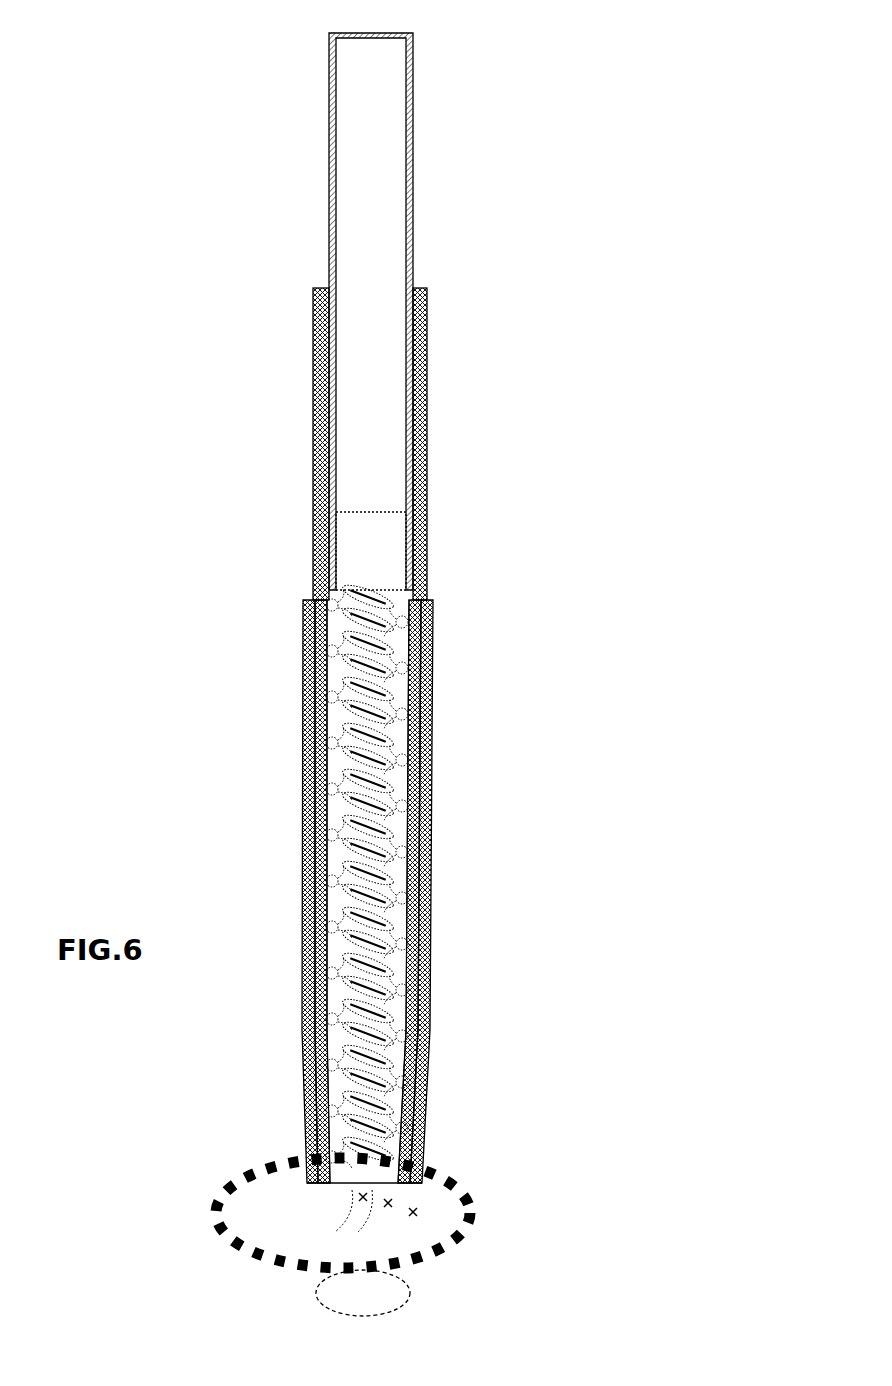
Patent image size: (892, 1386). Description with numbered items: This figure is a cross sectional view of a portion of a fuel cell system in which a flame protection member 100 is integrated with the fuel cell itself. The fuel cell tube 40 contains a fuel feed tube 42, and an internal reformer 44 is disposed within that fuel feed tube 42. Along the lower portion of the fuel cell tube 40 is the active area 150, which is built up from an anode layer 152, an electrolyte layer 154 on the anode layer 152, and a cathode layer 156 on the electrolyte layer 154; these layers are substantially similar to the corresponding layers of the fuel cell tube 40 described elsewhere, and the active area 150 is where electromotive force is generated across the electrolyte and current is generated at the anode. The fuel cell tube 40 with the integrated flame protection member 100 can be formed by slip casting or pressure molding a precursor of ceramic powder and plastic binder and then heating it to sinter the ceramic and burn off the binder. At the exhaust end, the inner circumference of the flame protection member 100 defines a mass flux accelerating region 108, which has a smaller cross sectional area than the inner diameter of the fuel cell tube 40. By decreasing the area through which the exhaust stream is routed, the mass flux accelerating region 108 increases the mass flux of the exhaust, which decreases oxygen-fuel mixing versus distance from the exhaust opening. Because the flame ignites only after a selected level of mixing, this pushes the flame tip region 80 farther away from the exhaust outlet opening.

The fuel feed tube 42 is at (418, 242).
The fuel cell tube 40 is at (417, 467).
The internal reformer 44 is at (393, 532).
The active area 150 is at (292, 599).
The anode layer 152 is at (418, 1122).
The electrolyte layer 154 is at (413, 1098).
The cathode layer 156 is at (433, 1068).
The flame protection member 100 is at (337, 1187).
The mass flux accelerating region 108 is at (343, 1185).
The flame tip region 80 is at (343, 1237).